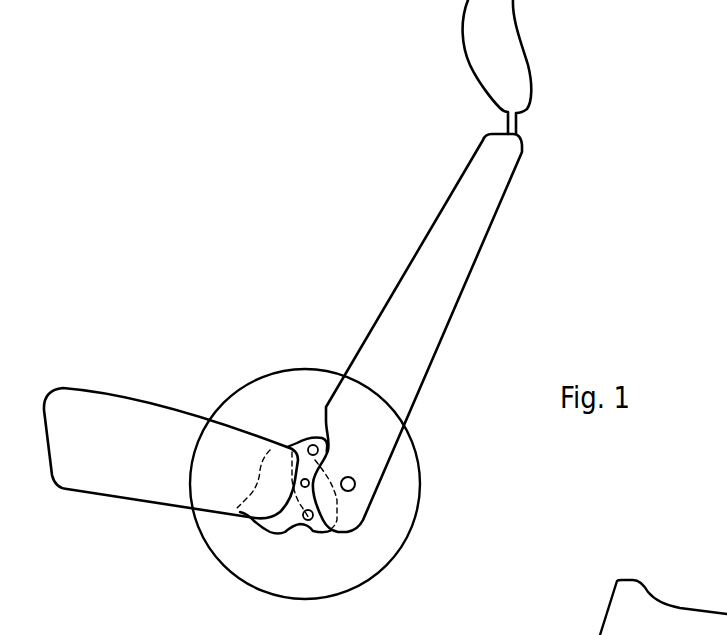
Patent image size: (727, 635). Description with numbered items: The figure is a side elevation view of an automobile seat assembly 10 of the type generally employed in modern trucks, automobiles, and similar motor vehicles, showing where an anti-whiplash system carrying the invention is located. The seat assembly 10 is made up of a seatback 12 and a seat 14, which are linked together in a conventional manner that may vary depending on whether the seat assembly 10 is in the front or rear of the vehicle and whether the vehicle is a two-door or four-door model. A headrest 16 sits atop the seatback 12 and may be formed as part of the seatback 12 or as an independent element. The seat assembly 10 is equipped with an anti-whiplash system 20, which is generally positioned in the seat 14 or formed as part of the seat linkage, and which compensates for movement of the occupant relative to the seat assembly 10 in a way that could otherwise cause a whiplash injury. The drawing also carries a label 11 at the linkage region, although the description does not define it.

The seat assembly 10 is at (232, 225).
The recliner plate 11 is at (328, 522).
The seatback 12 is at (450, 292).
The seat 14 is at (108, 467).
The headrest 16 is at (508, 38).
The anti-whiplash system 20 is at (260, 523).